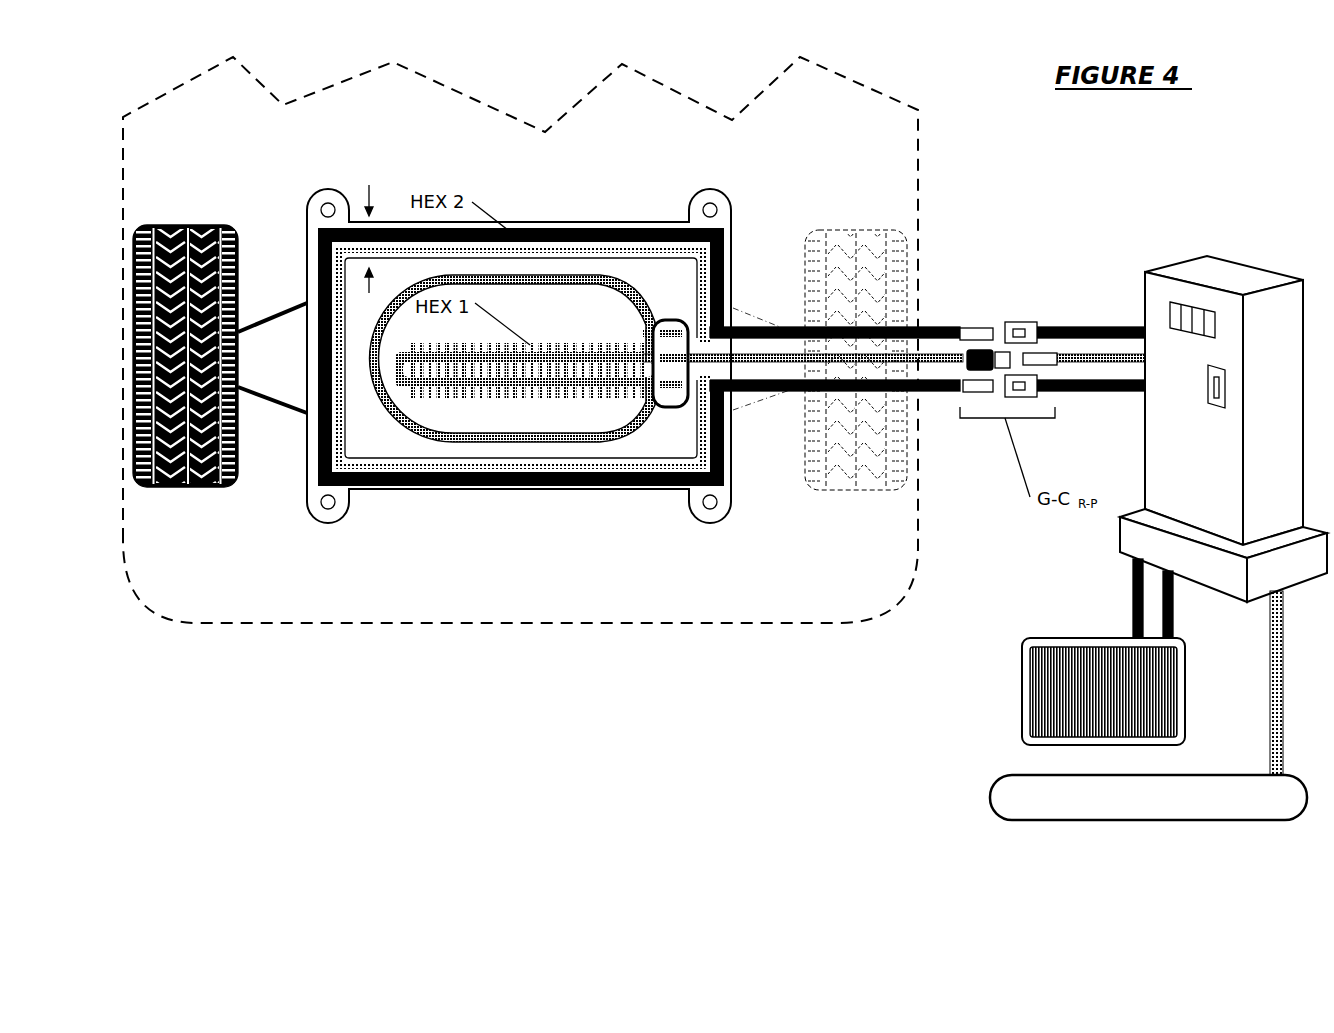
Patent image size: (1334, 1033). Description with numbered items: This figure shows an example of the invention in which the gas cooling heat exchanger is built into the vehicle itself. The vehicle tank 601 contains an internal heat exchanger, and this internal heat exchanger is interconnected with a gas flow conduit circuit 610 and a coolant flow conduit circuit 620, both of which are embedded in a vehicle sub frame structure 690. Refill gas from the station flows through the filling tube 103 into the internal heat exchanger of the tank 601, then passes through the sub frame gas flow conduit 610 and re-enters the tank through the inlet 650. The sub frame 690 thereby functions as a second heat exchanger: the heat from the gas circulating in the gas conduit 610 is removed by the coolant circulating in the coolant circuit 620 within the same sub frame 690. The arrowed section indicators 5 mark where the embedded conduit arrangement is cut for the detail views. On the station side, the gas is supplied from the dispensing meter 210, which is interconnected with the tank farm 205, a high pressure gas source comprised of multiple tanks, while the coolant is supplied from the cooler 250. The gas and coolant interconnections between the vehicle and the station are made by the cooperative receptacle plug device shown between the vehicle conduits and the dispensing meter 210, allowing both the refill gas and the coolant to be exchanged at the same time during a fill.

The section view indicator 5 is at (375, 181).
The filling tube 103 is at (768, 355).
The dispensing meter 210 is at (1145, 450).
The tank farm 205 is at (1073, 822).
The cooler 250 is at (1022, 683).
The tank 601 is at (516, 441).
The gas flow conduit circuit 610 is at (605, 465).
The coolant flow conduit circuit 620 is at (435, 487).
The inlet 650 is at (650, 333).
The vehicle sub frame structure 690 is at (333, 253).